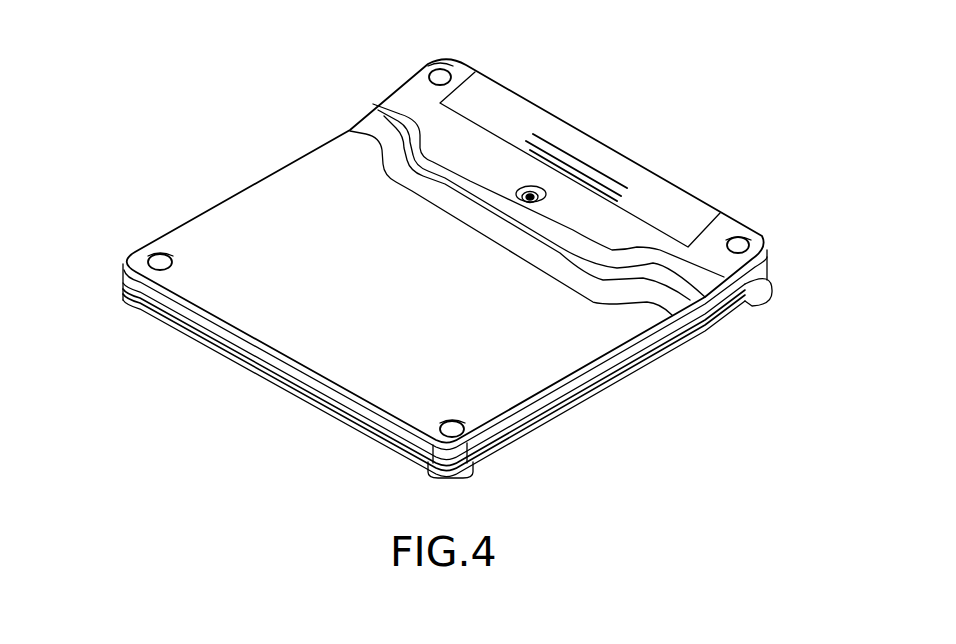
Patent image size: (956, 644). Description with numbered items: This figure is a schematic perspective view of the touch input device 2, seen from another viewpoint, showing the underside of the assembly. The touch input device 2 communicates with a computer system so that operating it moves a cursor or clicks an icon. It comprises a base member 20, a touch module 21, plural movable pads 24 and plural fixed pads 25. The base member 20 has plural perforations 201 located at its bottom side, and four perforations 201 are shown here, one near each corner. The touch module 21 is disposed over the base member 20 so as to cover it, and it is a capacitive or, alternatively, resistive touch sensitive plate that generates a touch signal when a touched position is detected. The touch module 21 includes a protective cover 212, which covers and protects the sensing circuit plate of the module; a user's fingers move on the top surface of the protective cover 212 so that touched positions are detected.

The touch input device 2 is at (718, 113).
The base member 20 is at (313, 168).
The perforations 201 is at (432, 70).
The touch module 21 is at (686, 352).
The protective cover 212 is at (735, 318).
The movable pads 24 is at (168, 258).
The fixed pads 25 is at (444, 73).